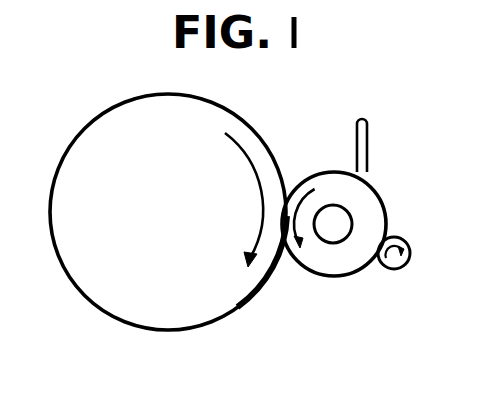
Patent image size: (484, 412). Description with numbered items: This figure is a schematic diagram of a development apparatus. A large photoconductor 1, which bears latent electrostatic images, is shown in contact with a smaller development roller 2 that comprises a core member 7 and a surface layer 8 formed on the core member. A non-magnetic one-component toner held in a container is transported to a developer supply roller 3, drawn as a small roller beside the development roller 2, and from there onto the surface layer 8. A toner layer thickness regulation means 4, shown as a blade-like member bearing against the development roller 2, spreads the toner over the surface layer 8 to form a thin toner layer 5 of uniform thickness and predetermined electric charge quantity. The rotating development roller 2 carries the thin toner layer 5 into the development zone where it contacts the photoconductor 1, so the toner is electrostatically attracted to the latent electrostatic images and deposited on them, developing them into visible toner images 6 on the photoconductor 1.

The photoconductor 1 is at (122, 324).
The development roller 2 is at (315, 274).
The developer supply roller 3 is at (399, 269).
The toner layer thickness regulation means 4 is at (368, 140).
The thin toner layer 5 is at (322, 172).
The visible toner images 6 is at (241, 307).
The core member 7 is at (333, 244).
The surface layer 8 is at (360, 264).